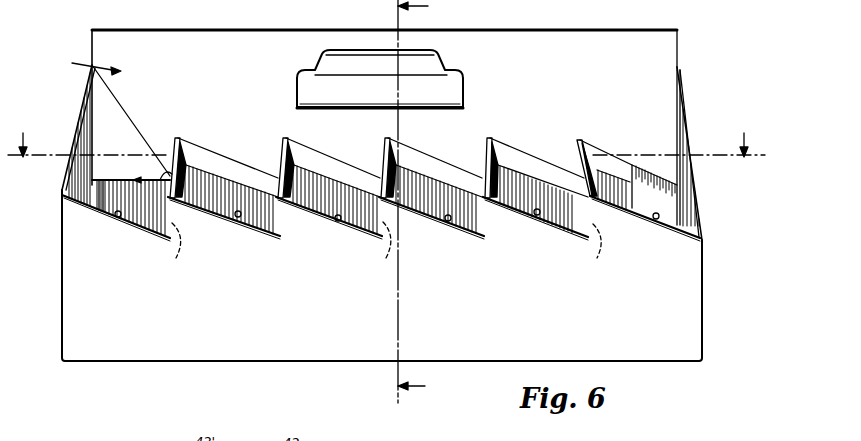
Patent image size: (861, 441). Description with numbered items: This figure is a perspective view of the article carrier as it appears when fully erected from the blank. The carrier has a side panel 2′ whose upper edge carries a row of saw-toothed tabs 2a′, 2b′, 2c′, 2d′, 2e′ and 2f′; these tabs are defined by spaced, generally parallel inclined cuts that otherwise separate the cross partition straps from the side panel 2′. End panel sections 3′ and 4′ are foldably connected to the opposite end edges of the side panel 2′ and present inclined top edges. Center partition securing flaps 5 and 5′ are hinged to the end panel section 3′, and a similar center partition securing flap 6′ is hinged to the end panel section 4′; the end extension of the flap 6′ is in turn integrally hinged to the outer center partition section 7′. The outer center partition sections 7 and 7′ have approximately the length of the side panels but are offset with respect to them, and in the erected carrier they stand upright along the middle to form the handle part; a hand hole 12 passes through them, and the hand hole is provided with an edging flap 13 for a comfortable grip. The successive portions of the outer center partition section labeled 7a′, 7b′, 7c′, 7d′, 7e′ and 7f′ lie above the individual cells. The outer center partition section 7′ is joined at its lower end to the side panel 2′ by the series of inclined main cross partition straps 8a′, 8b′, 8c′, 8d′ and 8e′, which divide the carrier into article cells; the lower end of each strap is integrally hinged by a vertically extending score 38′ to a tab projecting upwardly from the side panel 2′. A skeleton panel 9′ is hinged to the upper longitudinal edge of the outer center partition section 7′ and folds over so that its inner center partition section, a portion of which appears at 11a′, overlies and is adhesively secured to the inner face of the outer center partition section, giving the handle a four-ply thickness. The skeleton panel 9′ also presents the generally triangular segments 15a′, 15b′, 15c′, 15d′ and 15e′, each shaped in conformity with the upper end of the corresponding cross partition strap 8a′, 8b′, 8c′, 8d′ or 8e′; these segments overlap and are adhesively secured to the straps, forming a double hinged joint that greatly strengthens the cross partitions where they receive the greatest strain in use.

The side panel 2′ is at (382, 195).
The saw-toothed tab 2a′ is at (85, 228).
The saw-toothed tab 2b′ is at (228, 187).
The saw-toothed tab 2c′ is at (333, 187).
The saw-toothed tab 2d′ is at (435, 187).
The saw-toothed tab 2e′ is at (537, 187).
The sixth vane 2f′ is at (628, 188).
The end panel section 3′ is at (690, 220).
The end panel section 4′ is at (78, 176).
The center partition securing flap 5 is at (386, 145).
The center partition securing flap 5′ is at (652, 192).
The center partition securing flap 6′ is at (113, 200).
The outer center partition section 7 is at (413, 207).
The outer center partition section 7′ is at (91, 62).
The diagonal fold 7a′ is at (168, 156).
The vane top flange 7b′ is at (232, 173).
The vane top flange 7c′ is at (337, 173).
The vane top flange 7d′ is at (439, 174).
The vane top flange 7e′ is at (543, 173).
The vane top flange 7f′ is at (662, 165).
The cross partition strap 8a′ is at (155, 230).
The cross partition strap 8b′ is at (246, 166).
The cross partition strap 8c′ is at (378, 162).
The cross partition strap 8d′ is at (471, 238).
The cross partition strap 8e′ is at (563, 232).
The skeleton panel 9′ is at (96, 140).
The fold line 11a′ is at (131, 171).
The hand hole 12 is at (424, 85).
The edging flap 13 is at (360, 60).
The triangular segment 15a′ is at (194, 152).
The triangular segment 15b′ is at (300, 160).
The triangular segment 15c′ is at (403, 154).
The triangular segment 15d′ is at (497, 168).
The triangular segment 15e′ is at (598, 162).
The vertically extending score 38′ is at (388, 249).